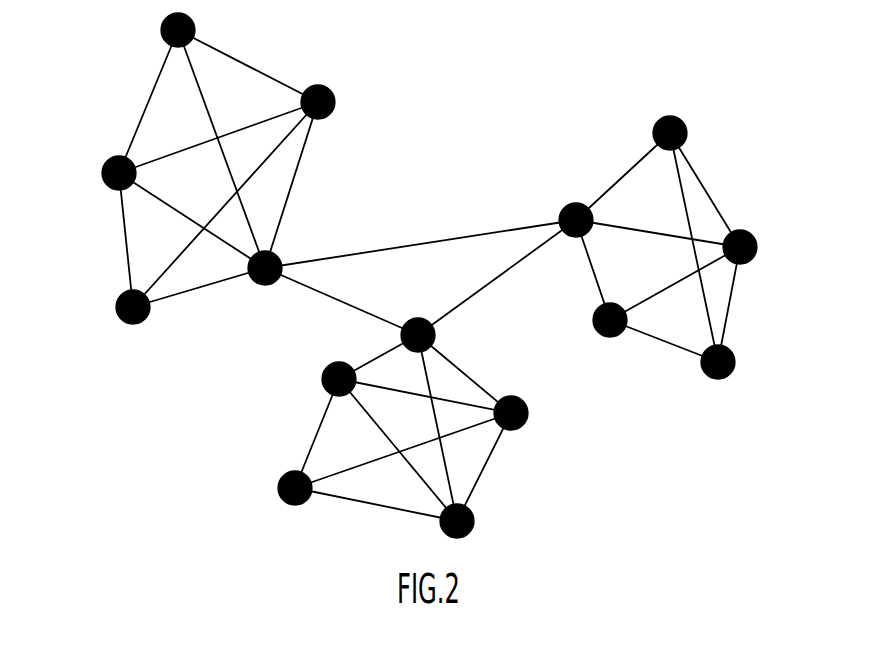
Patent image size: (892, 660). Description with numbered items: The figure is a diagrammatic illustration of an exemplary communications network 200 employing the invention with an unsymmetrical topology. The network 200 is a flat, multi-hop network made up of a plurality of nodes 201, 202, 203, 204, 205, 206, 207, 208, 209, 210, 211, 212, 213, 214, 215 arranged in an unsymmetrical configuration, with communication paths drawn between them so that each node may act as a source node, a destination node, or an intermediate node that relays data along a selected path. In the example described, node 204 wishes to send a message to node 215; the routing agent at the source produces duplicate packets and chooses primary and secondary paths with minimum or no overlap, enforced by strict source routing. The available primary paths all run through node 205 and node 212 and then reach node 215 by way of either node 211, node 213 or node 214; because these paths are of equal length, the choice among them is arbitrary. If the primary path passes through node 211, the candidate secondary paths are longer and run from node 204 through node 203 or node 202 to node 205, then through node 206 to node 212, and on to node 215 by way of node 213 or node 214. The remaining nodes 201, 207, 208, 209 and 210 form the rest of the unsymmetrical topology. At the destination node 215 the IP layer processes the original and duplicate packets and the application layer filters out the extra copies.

The network 200 is at (662, 468).
The node 201 is at (194, 27).
The node 202 is at (320, 86).
The node 203 is at (118, 157).
The node 204 is at (117, 308).
The node 205 is at (265, 284).
The node 206 is at (436, 334).
The node 207 is at (322, 378).
The node 208 is at (278, 487).
The node 209 is at (474, 521).
The node 210 is at (529, 411).
The node 211 is at (675, 117).
The node 212 is at (576, 203).
The node 213 is at (745, 230).
The node 214 is at (596, 325).
The node 215 is at (735, 362).